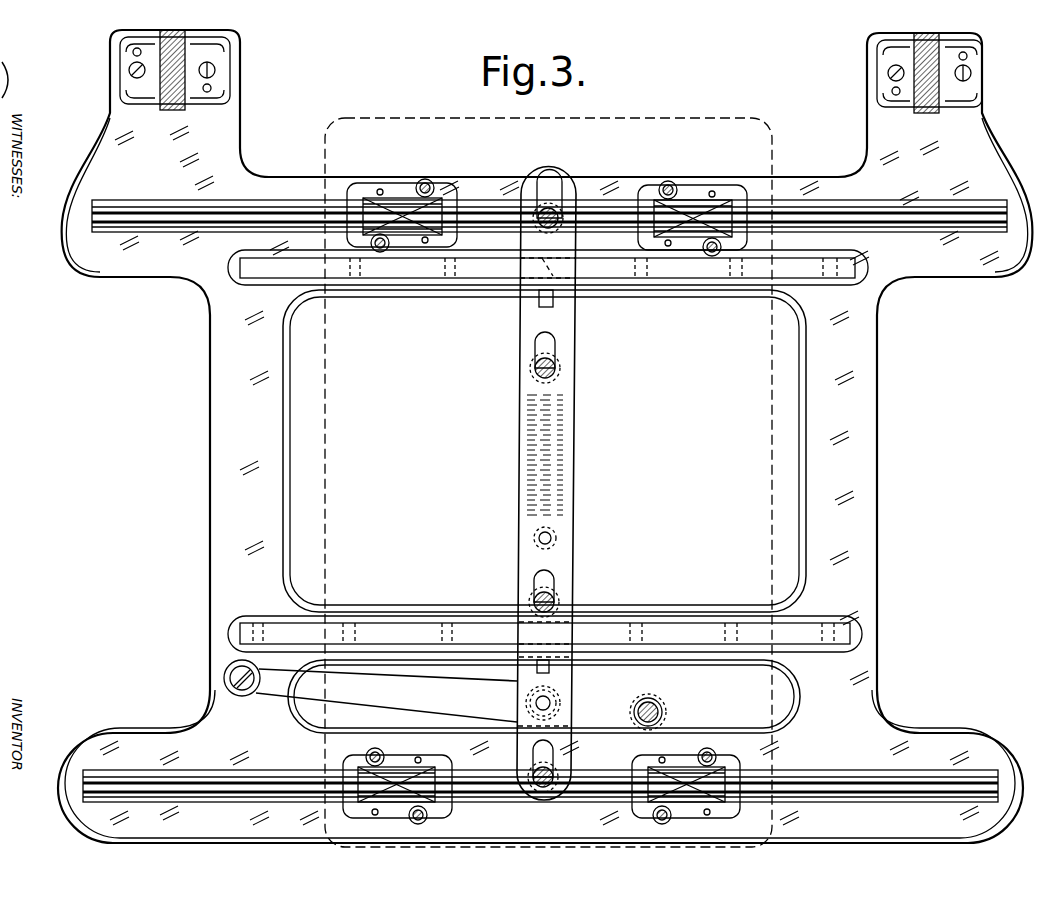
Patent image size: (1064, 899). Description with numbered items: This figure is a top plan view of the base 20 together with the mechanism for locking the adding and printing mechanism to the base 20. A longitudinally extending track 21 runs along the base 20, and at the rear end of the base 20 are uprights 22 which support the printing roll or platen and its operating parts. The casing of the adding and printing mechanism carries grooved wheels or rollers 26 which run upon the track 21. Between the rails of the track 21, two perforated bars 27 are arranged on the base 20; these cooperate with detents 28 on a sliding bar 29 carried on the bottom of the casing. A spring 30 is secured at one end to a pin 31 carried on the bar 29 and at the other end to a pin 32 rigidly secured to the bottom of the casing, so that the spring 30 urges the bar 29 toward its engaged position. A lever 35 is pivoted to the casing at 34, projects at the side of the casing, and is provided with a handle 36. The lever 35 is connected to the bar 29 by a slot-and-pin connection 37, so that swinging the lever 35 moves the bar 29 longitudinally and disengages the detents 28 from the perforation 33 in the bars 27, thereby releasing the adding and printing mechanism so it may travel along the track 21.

The base 20 is at (273, 462).
The track 21 is at (93, 226).
The uprights 22 is at (175, 106).
The grooved wheels or rollers 26 is at (393, 202).
The perforated bars 27 is at (627, 273).
The detents 28 is at (518, 602).
The sliding bar 29 is at (570, 413).
The spring 30 is at (526, 453).
The pin 31 is at (538, 537).
The pin 32 is at (535, 368).
The perforation 33 is at (355, 620).
The pivot 34 is at (656, 705).
The lever 35 is at (386, 695).
The handle 36 is at (228, 678).
The slot-and-pin connection 37 is at (553, 700).